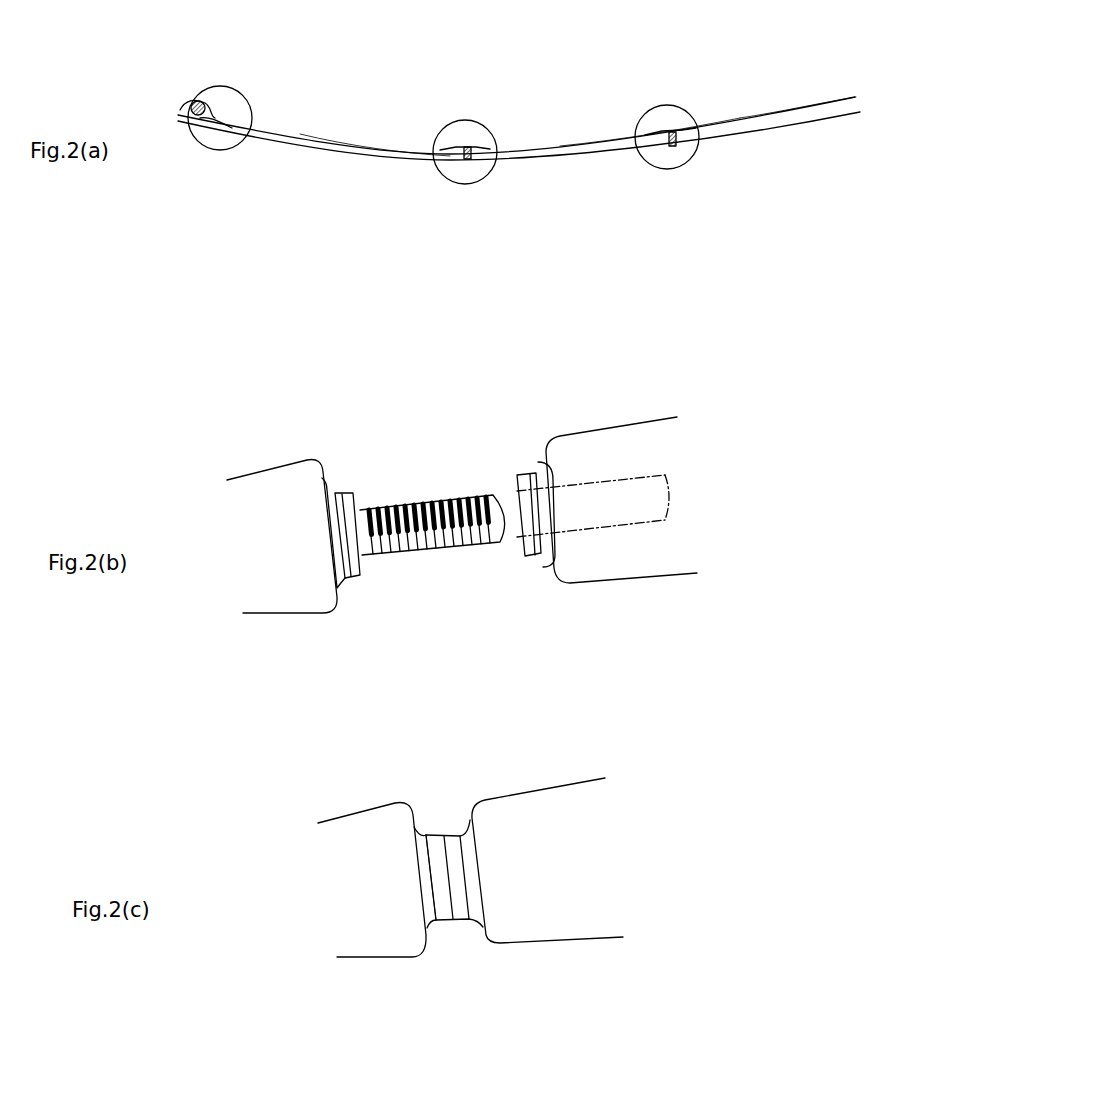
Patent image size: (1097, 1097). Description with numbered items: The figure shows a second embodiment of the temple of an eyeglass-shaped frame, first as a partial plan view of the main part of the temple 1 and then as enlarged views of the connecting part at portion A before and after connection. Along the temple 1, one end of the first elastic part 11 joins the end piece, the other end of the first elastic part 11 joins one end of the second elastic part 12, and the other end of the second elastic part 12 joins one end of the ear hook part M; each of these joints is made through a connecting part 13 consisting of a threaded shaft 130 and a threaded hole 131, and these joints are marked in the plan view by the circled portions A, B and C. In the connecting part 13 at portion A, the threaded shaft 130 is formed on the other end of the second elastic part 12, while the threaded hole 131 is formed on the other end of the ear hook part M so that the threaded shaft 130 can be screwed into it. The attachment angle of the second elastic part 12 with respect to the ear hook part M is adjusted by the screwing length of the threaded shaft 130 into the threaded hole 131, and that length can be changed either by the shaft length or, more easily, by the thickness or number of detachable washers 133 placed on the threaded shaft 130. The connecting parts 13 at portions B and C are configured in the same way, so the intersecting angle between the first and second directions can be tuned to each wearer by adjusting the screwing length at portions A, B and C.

In FIG. 2A, the band member 1 is at (289, 130).
In FIG. 2A, the first elastic part 11 is at (368, 160).
In FIG. 2A, the second elastic part 12 is at (557, 155).
In FIG. 2B, the second elastic part 12 is at (268, 597).
In FIG. 2C, the second elastic part 12 is at (360, 937).
In FIG. 2A, the connecting part 13 is at (205, 130).
In FIG. 2C, the connecting part 13 is at (440, 827).
In FIG. 2B, the threaded shaft 130 is at (420, 500).
In FIG. 2B, the threaded hole 131 is at (627, 487).
In FIG. 2B, the detachable washer 133 is at (347, 500).
In FIG. 2C, the detachable washer 133 is at (445, 910).
In FIG. 2A, the ear hook part M is at (738, 128).
In FIG. 2B, the ear hook part M is at (667, 558).
In FIG. 2C, the ear hook part M is at (588, 928).
In FIG. 2A, the portion A is at (667, 129).
In FIG. 2A, the portion B is at (465, 144).
In FIG. 2A, the portion C is at (220, 111).